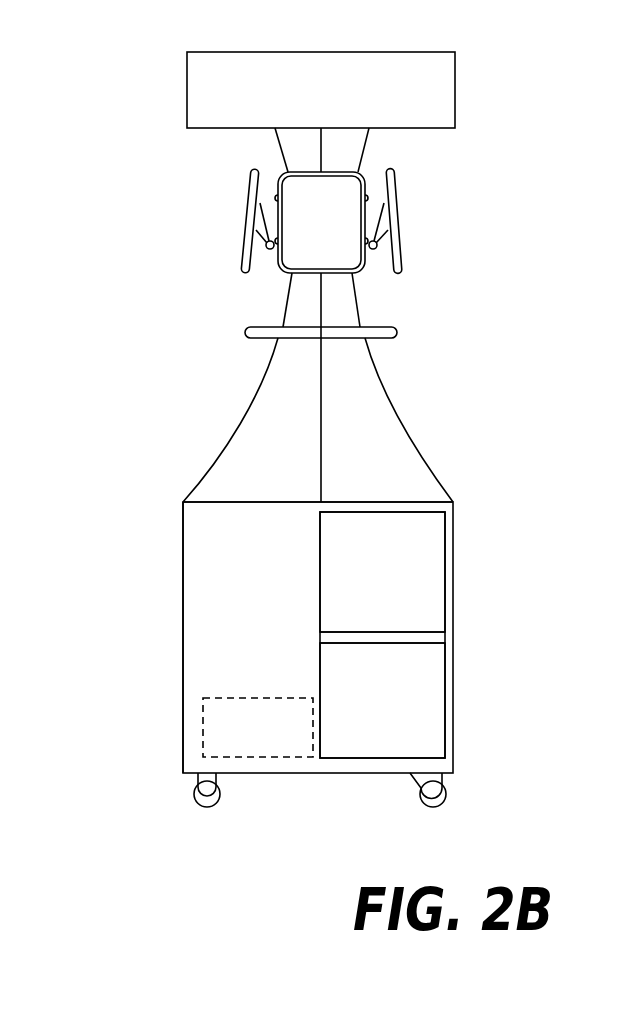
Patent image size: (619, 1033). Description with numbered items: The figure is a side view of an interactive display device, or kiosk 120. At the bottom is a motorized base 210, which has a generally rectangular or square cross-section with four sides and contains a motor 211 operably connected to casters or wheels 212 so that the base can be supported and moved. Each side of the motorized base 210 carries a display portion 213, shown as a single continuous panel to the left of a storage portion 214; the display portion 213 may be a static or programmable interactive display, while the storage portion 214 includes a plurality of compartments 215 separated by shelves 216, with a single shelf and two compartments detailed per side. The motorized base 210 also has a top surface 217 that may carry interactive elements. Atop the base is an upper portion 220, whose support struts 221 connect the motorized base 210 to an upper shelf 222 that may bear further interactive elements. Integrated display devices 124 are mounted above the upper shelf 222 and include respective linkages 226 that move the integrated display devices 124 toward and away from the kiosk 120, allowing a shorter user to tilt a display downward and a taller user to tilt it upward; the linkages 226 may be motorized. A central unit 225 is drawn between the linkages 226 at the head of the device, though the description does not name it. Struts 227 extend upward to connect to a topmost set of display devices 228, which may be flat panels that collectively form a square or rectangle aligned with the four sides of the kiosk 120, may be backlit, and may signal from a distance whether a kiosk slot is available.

The kiosk 120 is at (121, 147).
The topmost display devices 228 is at (440, 94).
The struts 227 is at (343, 145).
The linkages 226 is at (270, 224).
The integrated display devices 124 is at (248, 230).
The head unit 225 is at (348, 243).
The upper shelf 222 is at (260, 330).
The upper portion 220 is at (471, 312).
The support struts 221 is at (380, 437).
The top surface 217 is at (218, 502).
The motorized base 210 is at (462, 490).
The storage portion 214 is at (432, 538).
The compartments 215 is at (420, 578).
The shelves 216 is at (430, 628).
The display portion 213 is at (215, 633).
The motor 211 is at (232, 730).
The wheels 212 is at (228, 773).